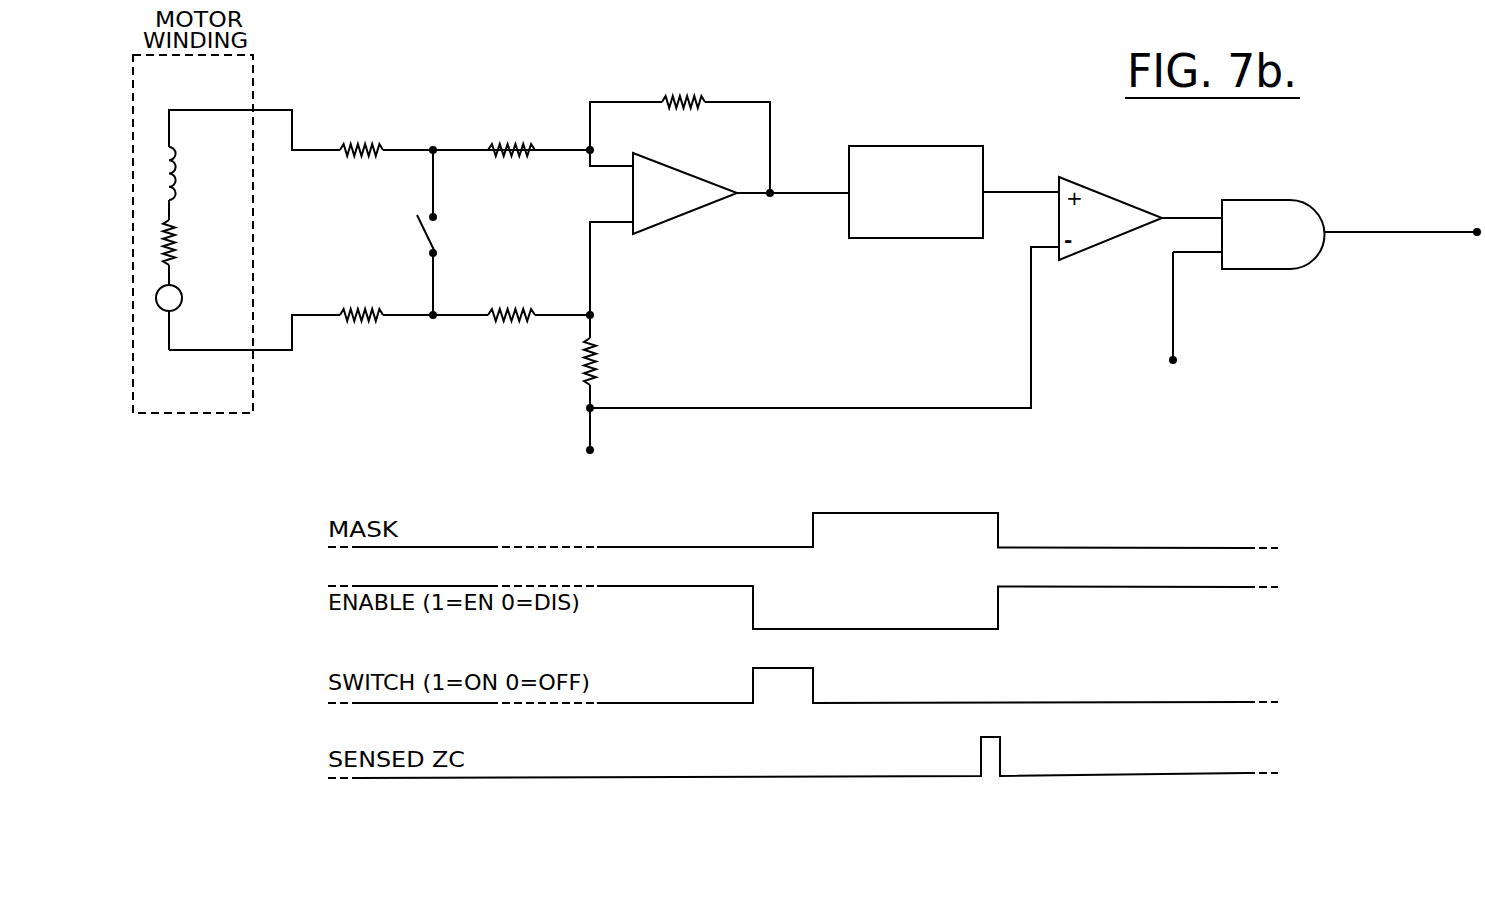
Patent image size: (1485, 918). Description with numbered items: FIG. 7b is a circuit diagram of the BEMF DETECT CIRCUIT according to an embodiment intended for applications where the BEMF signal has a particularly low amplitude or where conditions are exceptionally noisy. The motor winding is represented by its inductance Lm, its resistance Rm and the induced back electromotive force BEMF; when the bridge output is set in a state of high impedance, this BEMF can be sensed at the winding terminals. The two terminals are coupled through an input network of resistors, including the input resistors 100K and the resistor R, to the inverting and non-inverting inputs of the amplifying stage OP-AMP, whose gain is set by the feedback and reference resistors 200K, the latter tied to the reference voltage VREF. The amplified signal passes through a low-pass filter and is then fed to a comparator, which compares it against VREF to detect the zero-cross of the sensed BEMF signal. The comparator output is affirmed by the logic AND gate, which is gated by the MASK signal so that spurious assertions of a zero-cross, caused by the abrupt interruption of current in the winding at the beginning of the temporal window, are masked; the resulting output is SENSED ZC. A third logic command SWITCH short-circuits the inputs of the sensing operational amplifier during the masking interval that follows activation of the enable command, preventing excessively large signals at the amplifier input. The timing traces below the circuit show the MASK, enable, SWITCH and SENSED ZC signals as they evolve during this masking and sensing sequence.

The input resistor 100K is at (437, 220).
The feedback resistor 200K is at (647, 226).
The resistor R is at (511, 171).
The motor winding inductance Lm is at (196, 173).
The motor winding resistance Rm is at (193, 242).
The back electromotive force source BEMF is at (194, 322).
The SWITCH logic command SWITCH is at (408, 228).
The operational amplifier OP-AMP is at (680, 218).
The reference voltage VREF is at (556, 426).
The logic AND gate AND is at (1273, 234).
The MASK signal MASK is at (1181, 321).
The sensed zero-cross output SENSED ZC is at (1402, 247).